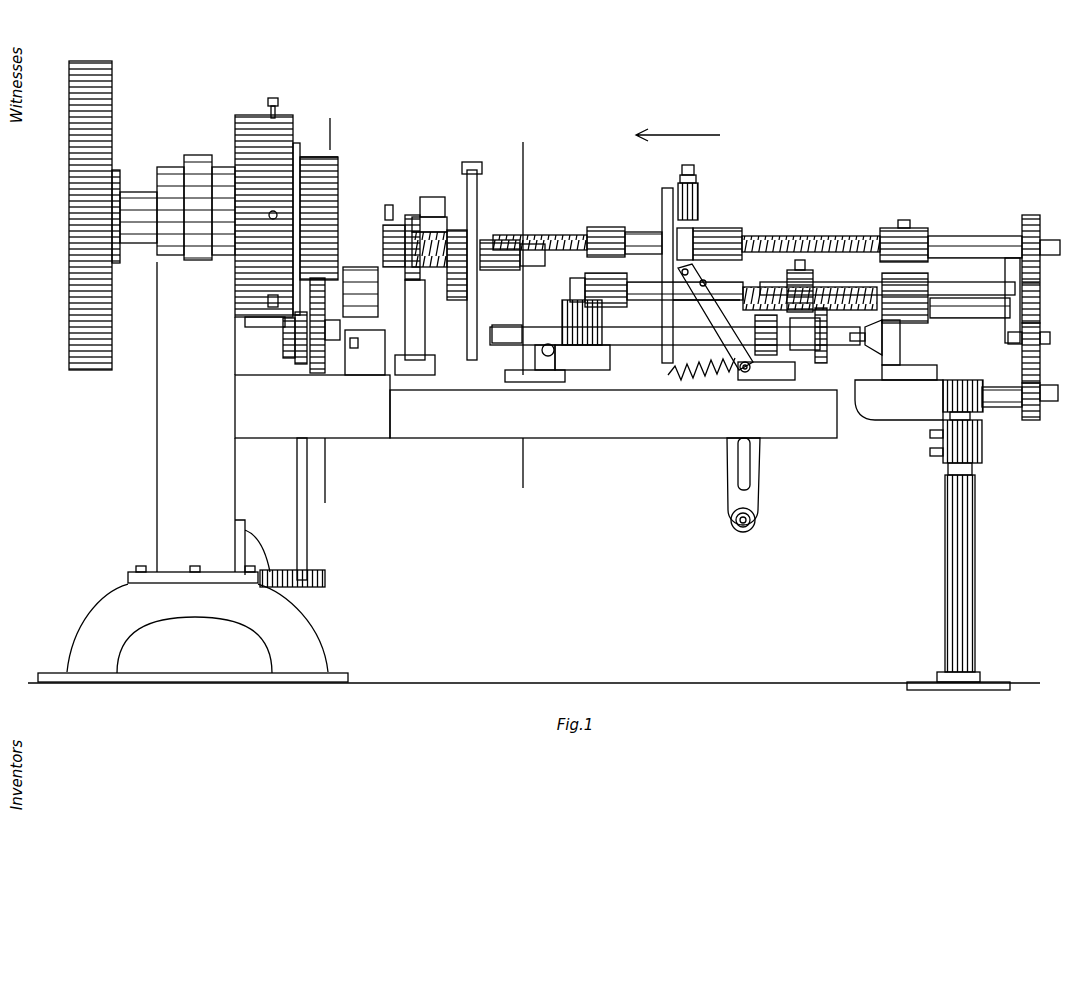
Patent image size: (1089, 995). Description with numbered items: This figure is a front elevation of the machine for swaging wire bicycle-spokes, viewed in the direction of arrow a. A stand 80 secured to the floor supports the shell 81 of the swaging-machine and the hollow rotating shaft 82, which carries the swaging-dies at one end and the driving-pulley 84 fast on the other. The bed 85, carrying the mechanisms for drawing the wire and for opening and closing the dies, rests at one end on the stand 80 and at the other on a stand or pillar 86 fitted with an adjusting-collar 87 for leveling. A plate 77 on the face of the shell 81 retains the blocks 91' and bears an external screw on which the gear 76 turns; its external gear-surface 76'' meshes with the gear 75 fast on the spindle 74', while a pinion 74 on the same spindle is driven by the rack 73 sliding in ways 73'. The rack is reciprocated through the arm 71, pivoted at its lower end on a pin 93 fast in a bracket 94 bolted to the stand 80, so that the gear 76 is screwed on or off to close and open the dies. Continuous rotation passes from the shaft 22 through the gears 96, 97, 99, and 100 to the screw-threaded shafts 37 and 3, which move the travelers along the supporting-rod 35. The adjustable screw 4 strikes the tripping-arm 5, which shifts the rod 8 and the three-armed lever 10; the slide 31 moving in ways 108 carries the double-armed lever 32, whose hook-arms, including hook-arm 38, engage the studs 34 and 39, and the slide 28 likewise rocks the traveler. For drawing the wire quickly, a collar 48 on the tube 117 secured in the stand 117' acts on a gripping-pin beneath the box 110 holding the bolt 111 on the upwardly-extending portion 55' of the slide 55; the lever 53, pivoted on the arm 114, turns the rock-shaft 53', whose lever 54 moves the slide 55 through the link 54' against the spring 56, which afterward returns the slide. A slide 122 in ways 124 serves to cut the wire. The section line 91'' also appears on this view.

The screw-threaded shaft 3 is at (830, 243).
The adjustable screw 4 is at (523, 316).
The tripping-arm 5 is at (545, 348).
The rod 8 is at (327, 312).
The three-armed lever 10 is at (470, 357).
The shaft 22 is at (985, 385).
The slide 28 is at (395, 343).
The slide 31 is at (562, 385).
The double-armed lever 32 is at (548, 385).
The stud 34 is at (522, 325).
The supporting-rod 35 is at (826, 290).
The screw-threaded shaft 37 is at (830, 308).
The hook-arm 38 is at (535, 257).
The stud 39 is at (453, 286).
The collar 48 is at (690, 228).
The lever 53 is at (763, 485).
The rock-shaft 53' is at (759, 388).
The lever 54 is at (715, 318).
The link 54' is at (859, 230).
The slide 55 is at (703, 292).
The upwardly-extending portion 55' is at (648, 272).
The spring 56 is at (701, 363).
The arm 71 is at (300, 474).
The rack 73 is at (295, 360).
The ways 73' is at (315, 341).
The pinion 74 is at (273, 360).
The spindle 74' is at (261, 340).
The gear 75 is at (335, 347).
The gear 76 is at (337, 211).
The external gear-surface 76'' is at (343, 135).
The plate 77 is at (297, 142).
The stand 80 is at (166, 382).
The shell 81 is at (248, 113).
The hollow rotating shaft 82 is at (135, 192).
The driving-pulley 84 is at (69, 290).
The bed 85 is at (595, 445).
The stand or pillar 86 is at (980, 502).
The adjusting-collar 87 is at (982, 410).
The blocks 91' is at (323, 242).
The bolt 91'' is at (297, 93).
The pin 93 is at (300, 583).
The bracket 94 is at (262, 535).
The gear 96 is at (1035, 417).
The gear 97 is at (1042, 360).
The gear 99 is at (1042, 298).
The gear 100 is at (1042, 225).
The ways 108 is at (582, 385).
The box 110 is at (697, 190).
The bolt 111 is at (690, 172).
The arm 114 is at (762, 452).
The tube 117 is at (713, 247).
The stand 117' is at (589, 280).
The slide 122 is at (870, 350).
The ways 124 is at (878, 353).
The arrow a is at (678, 129).